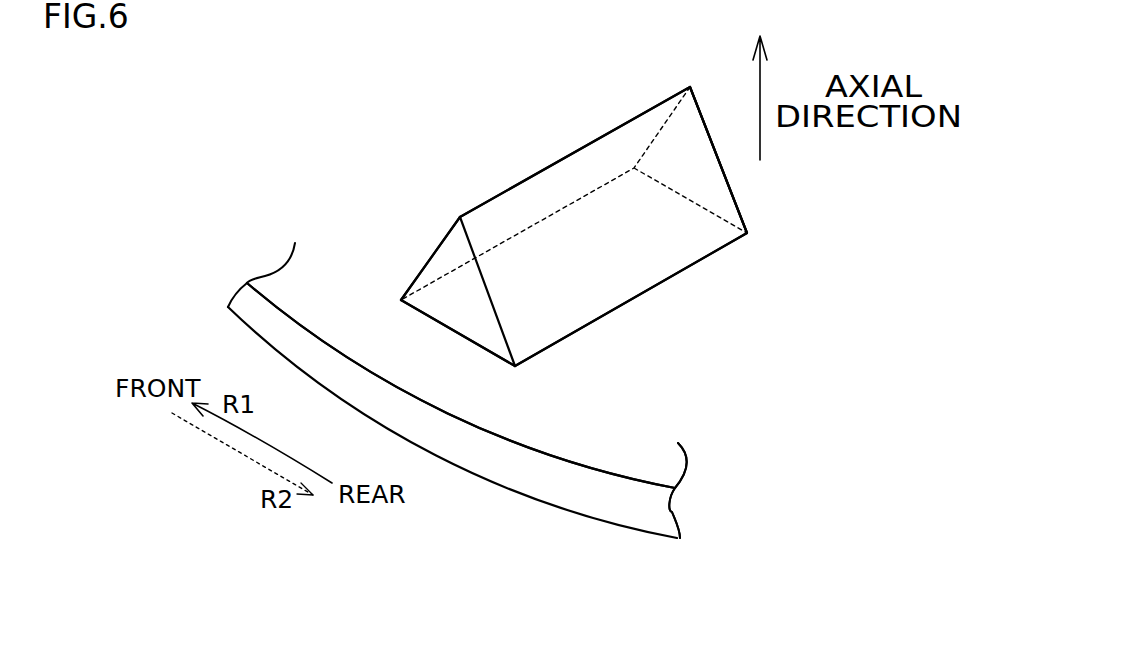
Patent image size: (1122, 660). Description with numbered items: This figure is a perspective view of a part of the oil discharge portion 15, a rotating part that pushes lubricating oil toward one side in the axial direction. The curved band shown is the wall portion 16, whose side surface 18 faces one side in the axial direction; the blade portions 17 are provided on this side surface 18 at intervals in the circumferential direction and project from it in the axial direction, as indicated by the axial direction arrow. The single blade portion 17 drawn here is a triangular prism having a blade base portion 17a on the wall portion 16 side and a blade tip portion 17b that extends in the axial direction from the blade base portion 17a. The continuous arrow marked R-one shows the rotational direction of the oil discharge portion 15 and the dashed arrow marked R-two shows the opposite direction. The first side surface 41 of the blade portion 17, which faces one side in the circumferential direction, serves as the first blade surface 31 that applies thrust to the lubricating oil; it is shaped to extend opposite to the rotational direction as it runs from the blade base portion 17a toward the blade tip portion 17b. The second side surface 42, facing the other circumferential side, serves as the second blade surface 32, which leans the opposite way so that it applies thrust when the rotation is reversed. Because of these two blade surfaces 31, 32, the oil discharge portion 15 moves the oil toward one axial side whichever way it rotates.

The oil discharge portion 15 is at (530, 510).
The wall portion 16 is at (458, 451).
The blade portion 17 is at (548, 155).
The blade base portion 17a is at (448, 330).
The blade tip portion 17b is at (460, 217).
The side surface 18 is at (647, 462).
The first blade surface 31 is at (435, 248).
The second blade surface 32 is at (542, 292).
The first side surface 41 is at (585, 165).
The second side surface 42 is at (710, 184).